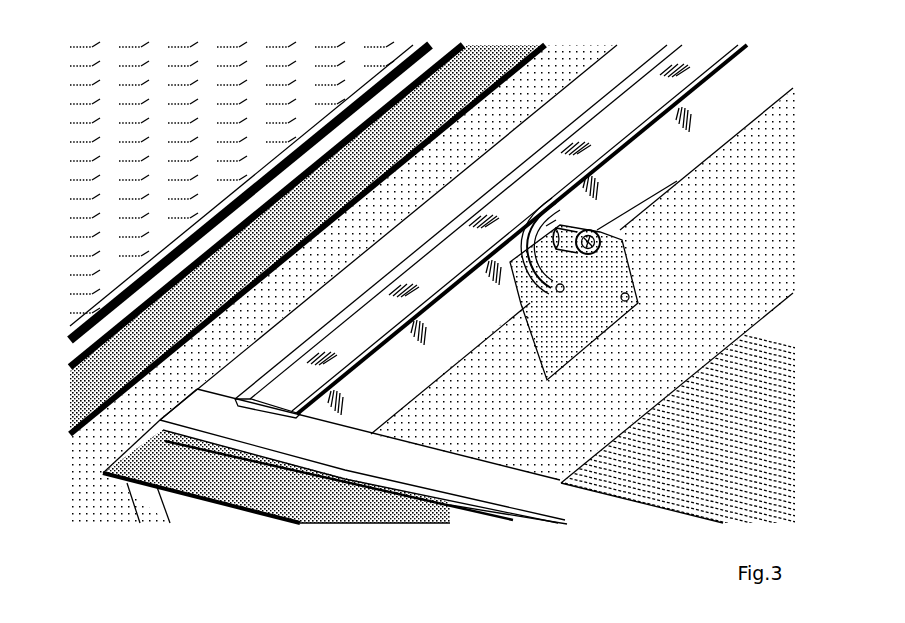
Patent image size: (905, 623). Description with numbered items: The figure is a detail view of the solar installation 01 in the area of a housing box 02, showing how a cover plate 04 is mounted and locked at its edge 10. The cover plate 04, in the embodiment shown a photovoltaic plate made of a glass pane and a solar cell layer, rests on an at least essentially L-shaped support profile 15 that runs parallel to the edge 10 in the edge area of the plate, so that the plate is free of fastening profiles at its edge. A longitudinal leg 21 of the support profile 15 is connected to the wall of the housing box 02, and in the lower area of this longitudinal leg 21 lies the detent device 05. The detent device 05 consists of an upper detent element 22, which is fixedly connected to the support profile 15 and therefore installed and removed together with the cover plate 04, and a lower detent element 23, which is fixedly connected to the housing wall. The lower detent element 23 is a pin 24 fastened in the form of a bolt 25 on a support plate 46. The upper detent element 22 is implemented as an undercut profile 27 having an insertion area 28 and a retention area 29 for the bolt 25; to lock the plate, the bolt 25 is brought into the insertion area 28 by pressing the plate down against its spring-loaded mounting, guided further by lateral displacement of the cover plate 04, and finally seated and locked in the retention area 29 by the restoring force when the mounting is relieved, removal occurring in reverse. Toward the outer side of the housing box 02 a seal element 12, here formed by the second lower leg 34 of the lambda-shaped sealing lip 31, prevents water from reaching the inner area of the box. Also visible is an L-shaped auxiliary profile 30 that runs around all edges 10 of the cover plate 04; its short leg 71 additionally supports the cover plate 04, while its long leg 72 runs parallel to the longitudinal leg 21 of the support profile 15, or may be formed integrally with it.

The solar installation 01 is at (165, 30).
The housing box 02 is at (62, 380).
The cover plate 04 is at (92, 262).
The edge 10 is at (376, 72).
The detent device 05 is at (526, 216).
The seal element 12 is at (83, 403).
The support profile 15 is at (445, 343).
The longitudinal leg 21 is at (370, 400).
The upper detent element 22 is at (542, 306).
The lower detent element 23 is at (602, 230).
The pin 24 is at (588, 242).
The bolt 25 is at (565, 240).
The undercut profile 27 is at (494, 236).
The insertion area 28 is at (520, 258).
The retention area 29 is at (546, 226).
The auxiliary profile 30 is at (633, 52).
The sealing lip 31 is at (103, 492).
The second lower leg 34 is at (96, 503).
The support plate 46 is at (603, 313).
The short leg 71 is at (551, 503).
The long leg 72 is at (482, 533).